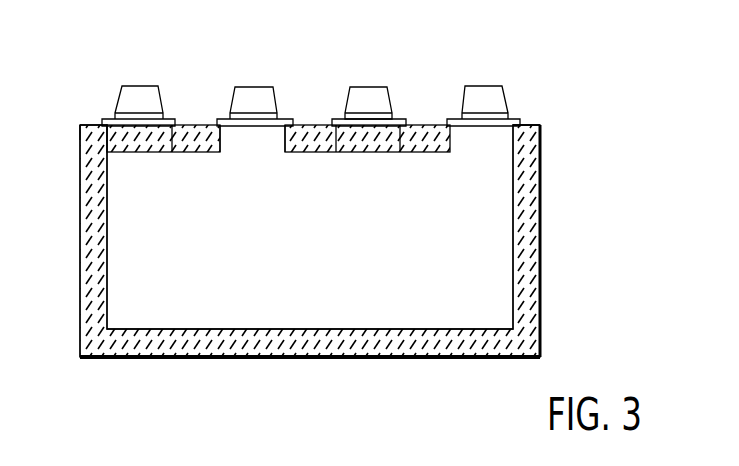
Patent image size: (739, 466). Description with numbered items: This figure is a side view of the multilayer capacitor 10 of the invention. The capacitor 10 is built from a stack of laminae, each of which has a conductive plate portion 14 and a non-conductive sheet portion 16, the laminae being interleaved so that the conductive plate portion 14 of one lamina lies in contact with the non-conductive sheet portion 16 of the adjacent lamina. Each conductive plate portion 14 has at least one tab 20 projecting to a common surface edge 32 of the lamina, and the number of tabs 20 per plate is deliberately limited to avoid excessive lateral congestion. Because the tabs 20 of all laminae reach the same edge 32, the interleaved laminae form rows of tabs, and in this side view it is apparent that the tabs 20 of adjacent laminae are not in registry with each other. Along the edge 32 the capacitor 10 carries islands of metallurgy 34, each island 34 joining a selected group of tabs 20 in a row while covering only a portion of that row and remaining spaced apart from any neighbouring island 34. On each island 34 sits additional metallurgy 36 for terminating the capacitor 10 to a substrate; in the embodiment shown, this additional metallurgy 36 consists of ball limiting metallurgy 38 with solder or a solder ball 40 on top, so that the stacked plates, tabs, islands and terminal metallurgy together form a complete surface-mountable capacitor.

The multilayer capacitor 10 is at (88, 105).
The conductive plate portion 14 is at (190, 160).
The non-conductive sheet portion 16 is at (524, 220).
The tab 20 is at (273, 138).
The surface edge 32 is at (531, 116).
The island of metallurgy 34 is at (450, 118).
The additional metallurgy 36 is at (351, 69).
The ball limiting metallurgy 38 is at (380, 113).
The solder ball 40 is at (362, 95).